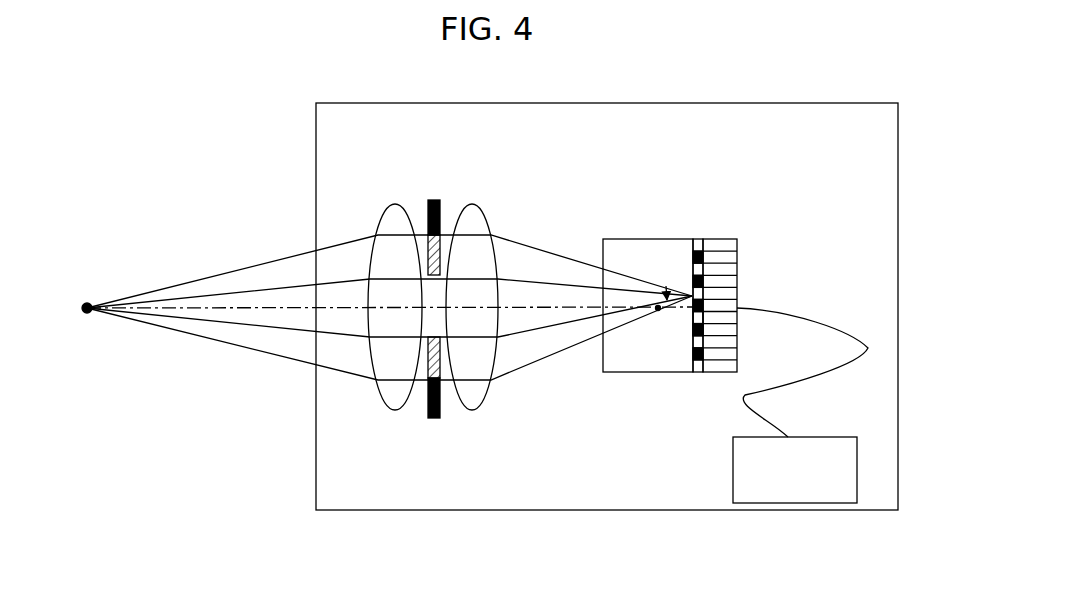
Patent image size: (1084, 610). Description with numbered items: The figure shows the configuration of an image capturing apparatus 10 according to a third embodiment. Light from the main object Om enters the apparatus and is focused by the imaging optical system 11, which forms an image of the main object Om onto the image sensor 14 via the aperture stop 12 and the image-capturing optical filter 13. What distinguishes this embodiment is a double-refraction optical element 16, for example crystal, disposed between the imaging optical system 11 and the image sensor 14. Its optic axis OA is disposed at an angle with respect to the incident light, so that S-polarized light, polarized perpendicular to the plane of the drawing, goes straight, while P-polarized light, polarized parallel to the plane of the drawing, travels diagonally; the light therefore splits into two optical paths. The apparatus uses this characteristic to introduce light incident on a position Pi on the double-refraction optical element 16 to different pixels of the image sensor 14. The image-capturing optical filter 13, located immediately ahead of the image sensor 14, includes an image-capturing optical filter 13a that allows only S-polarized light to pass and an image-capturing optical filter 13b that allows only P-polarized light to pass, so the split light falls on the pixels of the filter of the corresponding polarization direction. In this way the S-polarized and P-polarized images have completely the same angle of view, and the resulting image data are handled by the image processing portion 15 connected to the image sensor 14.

The image capturing apparatus 10 is at (838, 103).
The imaging optical system 11 is at (475, 410).
The aperture stop 12 is at (437, 188).
The image-capturing optical filter 13 is at (701, 230).
The image-capturing optical filter 13a is at (692, 332).
The image-capturing optical filter 13b is at (692, 318).
The image sensor 14 is at (728, 232).
The image processing portion 15 is at (733, 470).
The double-refraction optical element 16 is at (670, 258).
The main object Om is at (92, 290).
The position Pi is at (594, 297).
The optic axis OA is at (637, 246).